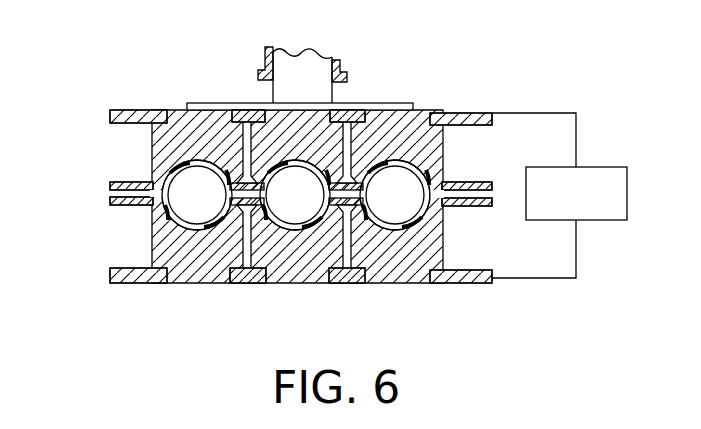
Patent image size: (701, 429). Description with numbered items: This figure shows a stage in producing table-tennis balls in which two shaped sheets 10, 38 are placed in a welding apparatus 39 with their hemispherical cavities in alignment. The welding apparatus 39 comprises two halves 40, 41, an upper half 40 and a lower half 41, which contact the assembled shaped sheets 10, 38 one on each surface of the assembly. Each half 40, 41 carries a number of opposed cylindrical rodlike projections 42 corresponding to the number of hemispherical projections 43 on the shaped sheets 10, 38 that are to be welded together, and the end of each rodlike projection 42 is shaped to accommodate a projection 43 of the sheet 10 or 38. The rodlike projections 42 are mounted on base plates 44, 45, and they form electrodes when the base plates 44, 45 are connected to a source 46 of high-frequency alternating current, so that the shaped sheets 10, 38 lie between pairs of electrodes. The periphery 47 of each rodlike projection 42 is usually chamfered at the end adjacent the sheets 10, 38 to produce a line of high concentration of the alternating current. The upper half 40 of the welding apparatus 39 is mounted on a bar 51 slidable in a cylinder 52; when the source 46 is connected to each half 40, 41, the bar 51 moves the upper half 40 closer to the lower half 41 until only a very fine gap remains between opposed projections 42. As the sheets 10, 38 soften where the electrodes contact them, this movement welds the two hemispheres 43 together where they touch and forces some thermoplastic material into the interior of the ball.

The shaped sheet 10 is at (113, 185).
The shaped sheet 38 is at (110, 200).
The welding apparatus 39 is at (478, 111).
The upper half of welding apparatus 40 is at (152, 123).
The lower half of welding apparatus 41 is at (152, 270).
The cylindrical rodlike projections 42 is at (292, 122).
The hemispherical projections 43 is at (200, 164).
The base plate 44 is at (450, 113).
The base plate 45 is at (473, 279).
The source of high-frequency alternating current 46 is at (576, 193).
The periphery of rodlike projections 47 is at (158, 181).
The bar 51 is at (309, 72).
The cylinder 52 is at (264, 62).